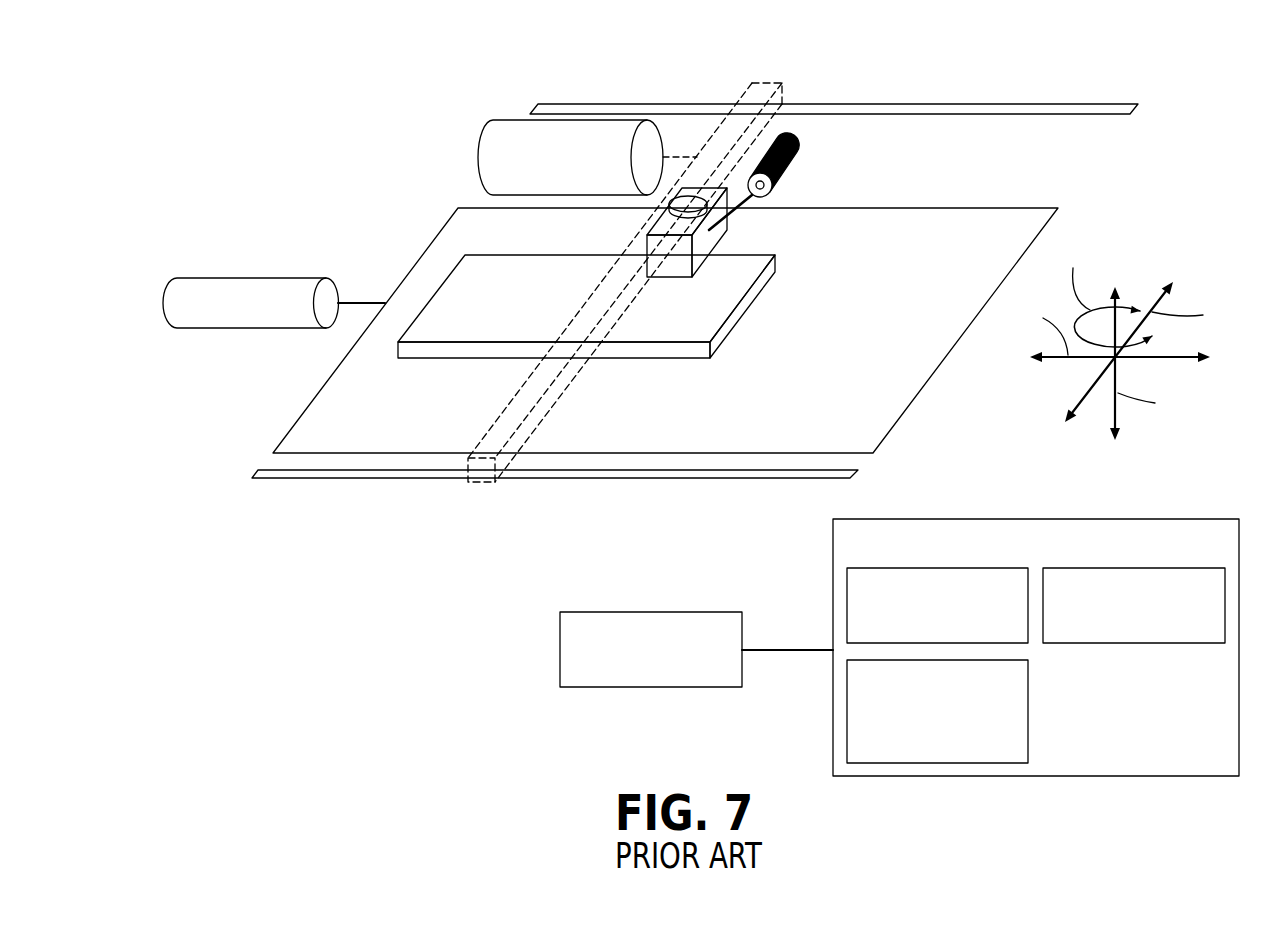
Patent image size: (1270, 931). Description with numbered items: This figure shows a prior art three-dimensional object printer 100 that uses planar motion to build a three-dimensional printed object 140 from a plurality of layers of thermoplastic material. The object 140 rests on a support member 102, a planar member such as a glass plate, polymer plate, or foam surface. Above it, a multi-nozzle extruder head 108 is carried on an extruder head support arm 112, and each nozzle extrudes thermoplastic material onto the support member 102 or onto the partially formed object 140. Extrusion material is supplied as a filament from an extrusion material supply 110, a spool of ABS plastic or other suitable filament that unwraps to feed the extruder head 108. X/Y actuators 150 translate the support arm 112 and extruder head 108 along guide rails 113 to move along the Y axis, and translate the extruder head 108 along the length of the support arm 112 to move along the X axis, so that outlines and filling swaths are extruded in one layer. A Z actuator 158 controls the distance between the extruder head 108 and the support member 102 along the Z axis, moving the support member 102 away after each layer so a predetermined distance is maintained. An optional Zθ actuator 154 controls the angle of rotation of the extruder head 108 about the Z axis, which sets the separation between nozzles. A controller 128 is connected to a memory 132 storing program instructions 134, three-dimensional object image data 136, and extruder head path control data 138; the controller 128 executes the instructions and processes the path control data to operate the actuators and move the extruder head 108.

The three-dimensional object printer 100 is at (352, 84).
The support member 102 is at (915, 395).
The extruder head 108 is at (714, 229).
The extrusion material supply 110 is at (793, 148).
The extruder head support arm 112 is at (750, 76).
The guide rails 113 is at (890, 103).
The controller 128 is at (560, 650).
The memory 132 is at (1022, 519).
The program instructions 134 is at (847, 598).
The 3D object image data 136 is at (1133, 643).
The extruder head path control data 138 is at (1028, 710).
The three-dimensional printed object 140 is at (683, 360).
The X/Y actuators 150 is at (477, 158).
The Zθ actuator 154 is at (670, 204).
The Z actuator 158 is at (251, 277).